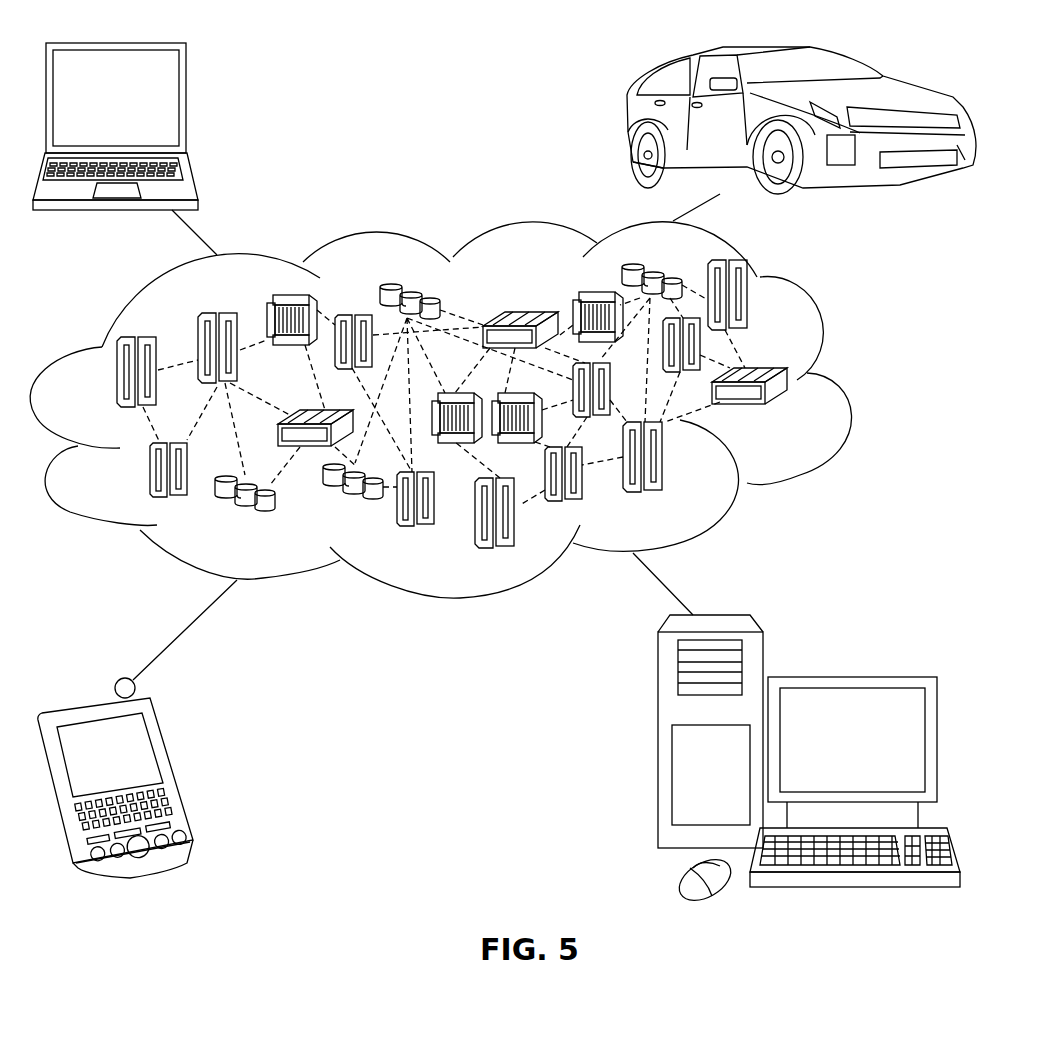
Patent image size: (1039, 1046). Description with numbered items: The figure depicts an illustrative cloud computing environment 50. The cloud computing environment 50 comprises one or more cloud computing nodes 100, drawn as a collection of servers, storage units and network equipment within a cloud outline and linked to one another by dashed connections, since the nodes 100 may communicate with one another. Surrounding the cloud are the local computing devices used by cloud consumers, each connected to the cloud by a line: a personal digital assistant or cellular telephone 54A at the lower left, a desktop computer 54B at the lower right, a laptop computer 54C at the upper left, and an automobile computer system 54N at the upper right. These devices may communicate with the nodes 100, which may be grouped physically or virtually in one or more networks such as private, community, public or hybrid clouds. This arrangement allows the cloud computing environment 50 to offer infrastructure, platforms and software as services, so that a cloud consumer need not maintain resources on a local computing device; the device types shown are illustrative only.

The cloud computing environment 50 is at (850, 382).
The cloud computing nodes 100 is at (792, 413).
The personal digital assistant or cellular telephone 54A is at (173, 770).
The desktop computer 54B is at (850, 675).
The laptop computer 54C is at (186, 106).
The automobile computer system 54N is at (632, 123).